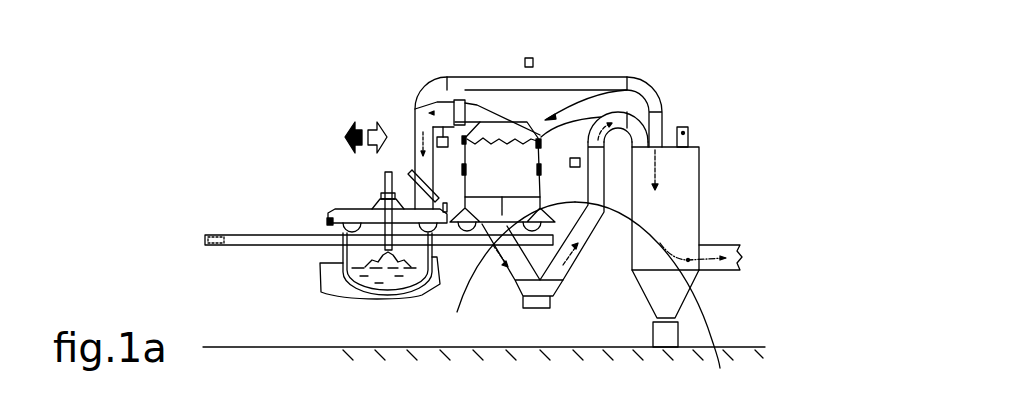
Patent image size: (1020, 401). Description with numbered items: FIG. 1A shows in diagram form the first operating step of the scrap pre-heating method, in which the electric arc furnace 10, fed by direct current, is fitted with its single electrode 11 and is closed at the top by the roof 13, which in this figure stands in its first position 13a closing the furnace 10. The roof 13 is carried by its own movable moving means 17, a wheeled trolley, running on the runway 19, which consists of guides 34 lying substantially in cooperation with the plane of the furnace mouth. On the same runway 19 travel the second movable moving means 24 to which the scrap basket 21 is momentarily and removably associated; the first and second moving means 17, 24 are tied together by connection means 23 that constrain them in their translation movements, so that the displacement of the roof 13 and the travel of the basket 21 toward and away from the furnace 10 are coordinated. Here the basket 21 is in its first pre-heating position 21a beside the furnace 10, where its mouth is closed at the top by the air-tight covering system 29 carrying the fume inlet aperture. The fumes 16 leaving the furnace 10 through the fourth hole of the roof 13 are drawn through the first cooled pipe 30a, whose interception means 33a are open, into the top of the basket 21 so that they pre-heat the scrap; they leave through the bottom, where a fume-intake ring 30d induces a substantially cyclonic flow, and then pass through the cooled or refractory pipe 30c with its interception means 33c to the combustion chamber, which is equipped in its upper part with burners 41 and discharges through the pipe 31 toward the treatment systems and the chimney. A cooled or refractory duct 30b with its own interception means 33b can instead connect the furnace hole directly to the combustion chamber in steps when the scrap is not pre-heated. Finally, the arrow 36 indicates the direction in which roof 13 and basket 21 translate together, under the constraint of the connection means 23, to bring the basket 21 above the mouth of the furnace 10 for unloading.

The electric arc furnace 10 is at (318, 263).
The electrode 11 is at (387, 252).
The roof 13 is at (373, 213).
The first position of the roof 13a is at (328, 198).
The fumes 16 is at (688, 261).
The movable moving means 17 is at (340, 224).
The runway 19 is at (203, 226).
The basket 21 is at (662, 109).
The first pre-heating position of the basket 21a is at (630, 91).
The connection means 23 is at (447, 238).
The second movable moving means 24 is at (553, 224).
The air-tight covering system 29 is at (507, 126).
The first cooled pipe 30a is at (452, 110).
The cooled or refractory duct 30b is at (578, 86).
The cooled or refractory pipe 30c is at (604, 210).
The fume-intake ring 30d is at (661, 301).
The pipe 31 is at (745, 260).
The interception means 33a is at (430, 127).
The interception means 33b is at (533, 60).
The interception means 33c is at (580, 163).
The guides 34 is at (212, 240).
The direction of translation 36 is at (347, 127).
The burners 41 is at (684, 133).